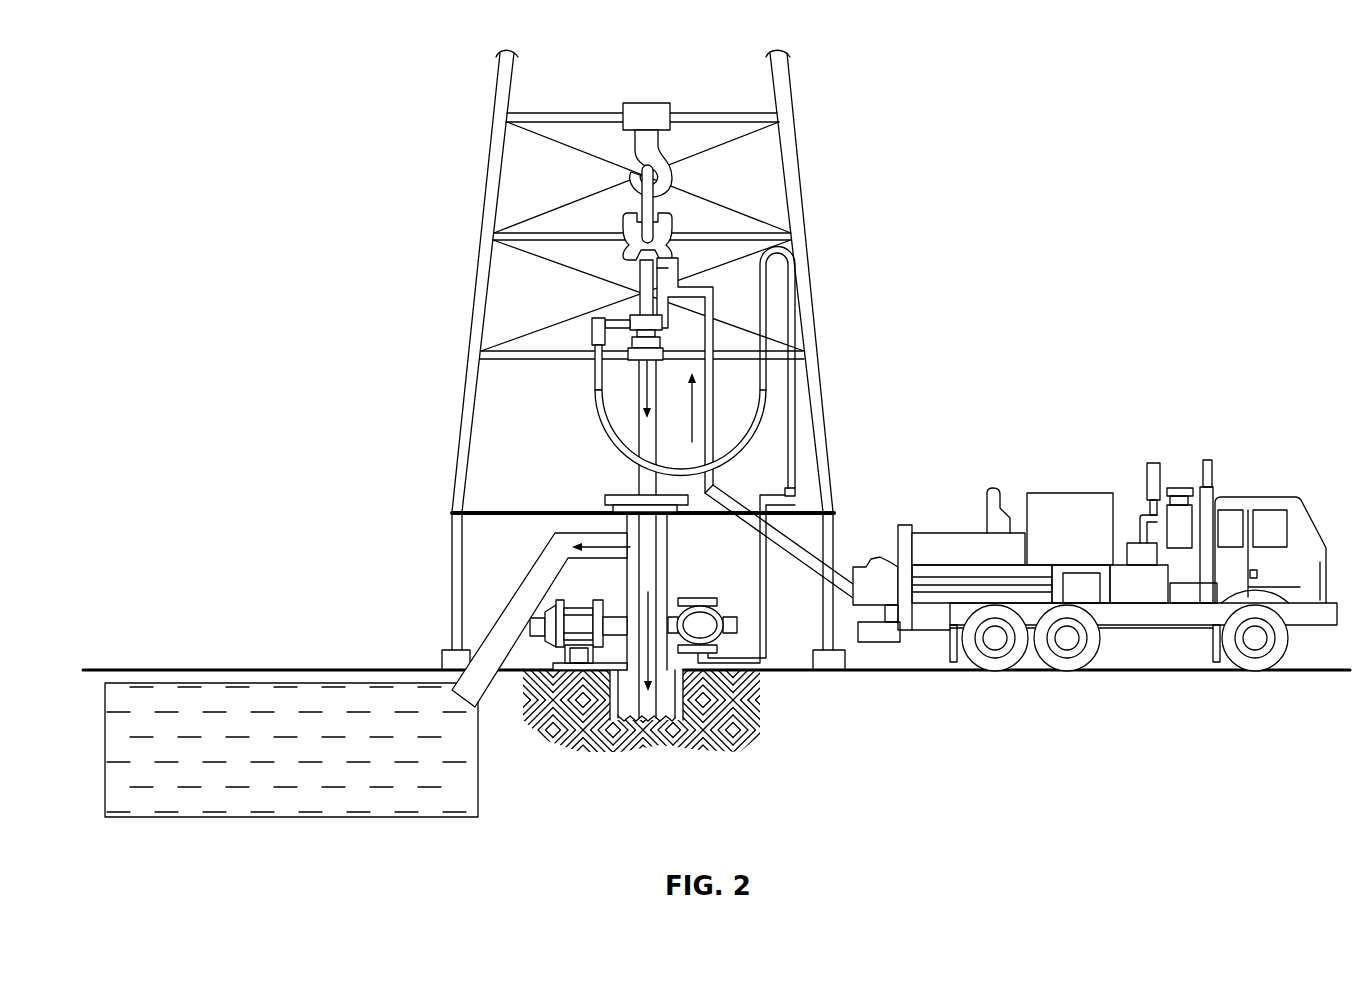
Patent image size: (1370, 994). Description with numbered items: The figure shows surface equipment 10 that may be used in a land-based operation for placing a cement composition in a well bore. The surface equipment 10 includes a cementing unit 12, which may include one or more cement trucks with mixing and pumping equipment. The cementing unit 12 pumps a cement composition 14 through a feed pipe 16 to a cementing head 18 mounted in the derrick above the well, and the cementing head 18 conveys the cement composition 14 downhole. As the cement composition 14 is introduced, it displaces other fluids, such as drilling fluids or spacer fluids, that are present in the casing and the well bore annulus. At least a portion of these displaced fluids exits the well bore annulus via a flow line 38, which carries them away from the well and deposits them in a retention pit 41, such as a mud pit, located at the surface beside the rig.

The surface equipment 10 is at (1154, 138).
The cementing unit 12 is at (1142, 636).
The cement composition 14 is at (637, 430).
The feed pipe 16 is at (794, 541).
The cementing head 18 is at (678, 223).
The flow line 38 is at (480, 648).
The retention pit 41 is at (418, 818).